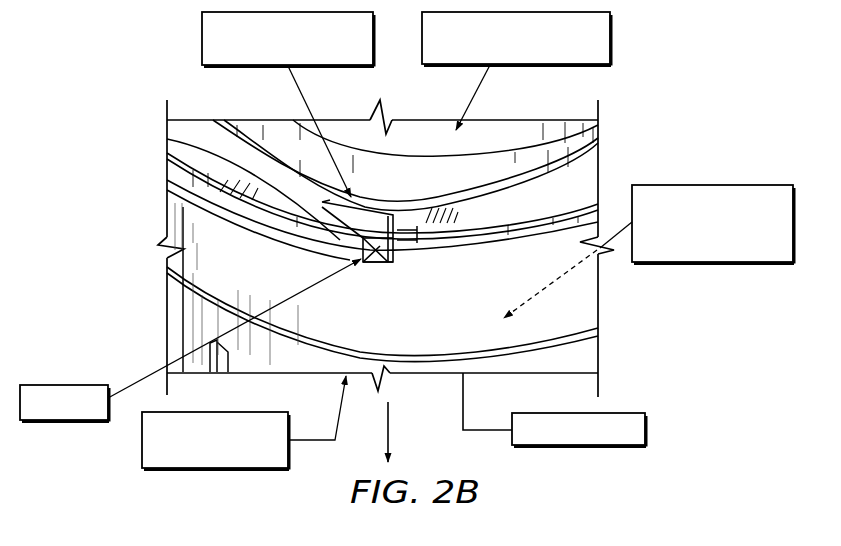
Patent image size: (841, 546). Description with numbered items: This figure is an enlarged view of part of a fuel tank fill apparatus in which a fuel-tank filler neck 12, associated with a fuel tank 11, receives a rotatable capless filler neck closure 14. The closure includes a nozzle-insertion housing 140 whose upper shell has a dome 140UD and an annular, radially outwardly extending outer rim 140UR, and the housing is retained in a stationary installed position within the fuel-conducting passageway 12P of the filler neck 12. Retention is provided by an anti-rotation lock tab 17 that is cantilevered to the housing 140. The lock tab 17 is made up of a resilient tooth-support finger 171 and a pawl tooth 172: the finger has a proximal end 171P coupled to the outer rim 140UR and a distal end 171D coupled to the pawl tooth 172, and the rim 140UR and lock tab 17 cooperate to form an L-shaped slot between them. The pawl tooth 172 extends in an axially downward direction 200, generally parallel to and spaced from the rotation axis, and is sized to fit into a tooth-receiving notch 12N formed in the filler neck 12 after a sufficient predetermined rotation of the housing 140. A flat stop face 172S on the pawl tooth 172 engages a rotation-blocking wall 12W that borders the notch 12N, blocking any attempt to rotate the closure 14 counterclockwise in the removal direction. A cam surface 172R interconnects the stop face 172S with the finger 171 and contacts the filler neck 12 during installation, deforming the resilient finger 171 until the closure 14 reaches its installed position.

The fuel tank 11 is at (603, 413).
The fuel-tank filler neck 12 is at (246, 412).
The tooth-receiving notch 12N is at (82, 385).
The fuel-conducting passageway 12P is at (694, 185).
The rotation-blocking wall 12W is at (385, 258).
The capless filler neck closure 14 is at (612, 33).
The anti-rotation lock tab 17 is at (202, 38).
The nozzle-insertion housing 140 is at (267, 116).
The dome 140UD is at (515, 125).
The outer rim 140UR is at (570, 193).
The resilient tooth-support finger 171 is at (317, 237).
The distal end 171D is at (363, 222).
The proximal end 171P is at (167, 139).
The pawl tooth 172 is at (393, 257).
The cam surface 172R is at (363, 264).
The flat stop face 172S is at (418, 223).
The axially downward direction 200 is at (392, 427).